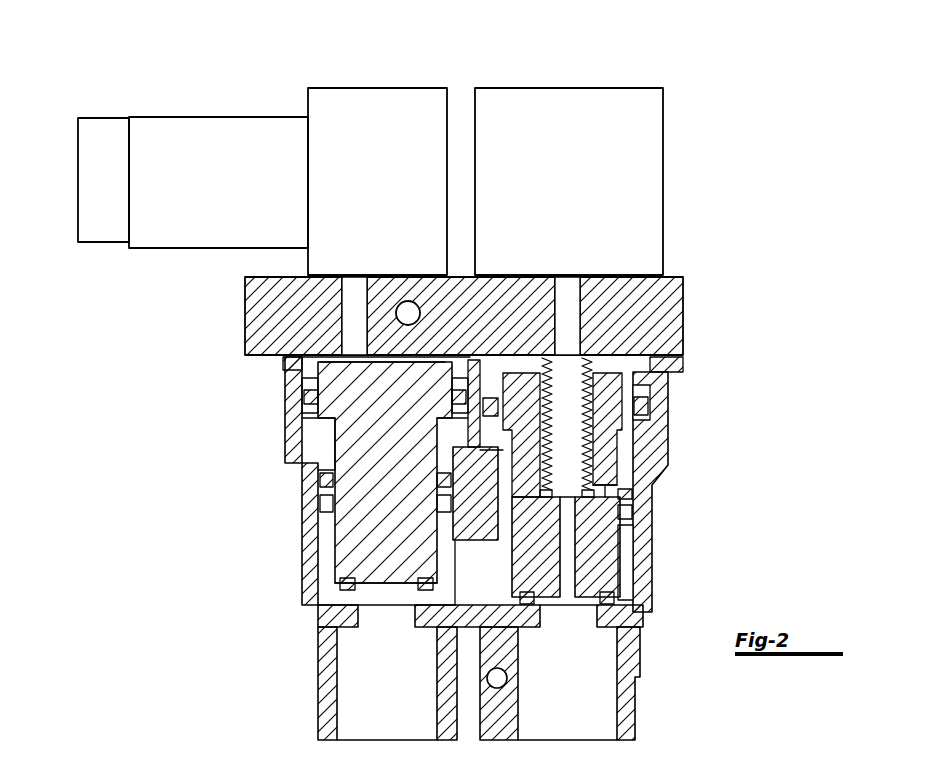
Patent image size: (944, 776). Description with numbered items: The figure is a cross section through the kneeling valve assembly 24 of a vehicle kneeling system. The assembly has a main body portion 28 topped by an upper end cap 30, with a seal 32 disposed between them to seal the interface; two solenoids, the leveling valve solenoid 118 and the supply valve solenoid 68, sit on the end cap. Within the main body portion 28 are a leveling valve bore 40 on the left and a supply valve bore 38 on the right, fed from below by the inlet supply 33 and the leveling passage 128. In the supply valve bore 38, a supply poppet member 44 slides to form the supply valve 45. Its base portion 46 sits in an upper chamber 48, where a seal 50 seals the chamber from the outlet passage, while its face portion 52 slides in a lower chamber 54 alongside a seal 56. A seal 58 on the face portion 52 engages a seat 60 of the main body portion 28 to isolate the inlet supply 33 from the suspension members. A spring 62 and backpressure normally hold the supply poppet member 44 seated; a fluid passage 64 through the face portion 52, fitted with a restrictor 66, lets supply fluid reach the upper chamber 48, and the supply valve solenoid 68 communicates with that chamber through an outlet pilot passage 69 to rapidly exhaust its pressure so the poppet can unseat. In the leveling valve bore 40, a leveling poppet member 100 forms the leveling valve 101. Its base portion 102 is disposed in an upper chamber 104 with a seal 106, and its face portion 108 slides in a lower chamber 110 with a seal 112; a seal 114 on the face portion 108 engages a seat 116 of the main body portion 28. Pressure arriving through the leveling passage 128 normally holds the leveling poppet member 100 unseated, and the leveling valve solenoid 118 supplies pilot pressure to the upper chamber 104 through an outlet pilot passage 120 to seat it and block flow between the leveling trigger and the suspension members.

The kneeling valve assembly 24 is at (740, 176).
The main body portion 28 is at (297, 432).
The upper end cap 30 is at (353, 318).
The seal 32 is at (683, 358).
The inlet supply 33 is at (580, 718).
The supply valve bore 38 is at (627, 508).
The leveling valve bore 40 is at (322, 500).
The supply poppet member 44 is at (612, 592).
The supply valve 45 is at (695, 547).
The base portion 46 is at (620, 380).
The upper chamber 48 is at (635, 372).
The seal 50 is at (608, 470).
The face portion 52 is at (568, 558).
The lower chamber 54 is at (498, 592).
The seal 56 is at (508, 503).
The seal 58 is at (523, 600).
The seat 60 is at (610, 600).
The spring 62 is at (598, 348).
The fluid passage 64 is at (625, 575).
The restrictor 66 is at (633, 497).
The supply valve solenoid 68 is at (596, 102).
The outlet pilot passage 69 is at (600, 280).
The leveling poppet member 100 is at (335, 577).
The leveling valve 101 is at (218, 568).
The base portion 102 is at (307, 385).
The upper chamber 104 is at (337, 372).
The seal 106 is at (312, 397).
The face portion 108 is at (330, 545).
The lower chamber 110 is at (332, 596).
The seal 112 is at (323, 478).
The seal 114 is at (325, 622).
The seat 116 is at (430, 604).
The leveling valve solenoid 118 is at (362, 105).
The outlet pilot passage 120 is at (330, 327).
The leveling passage 128 is at (398, 713).